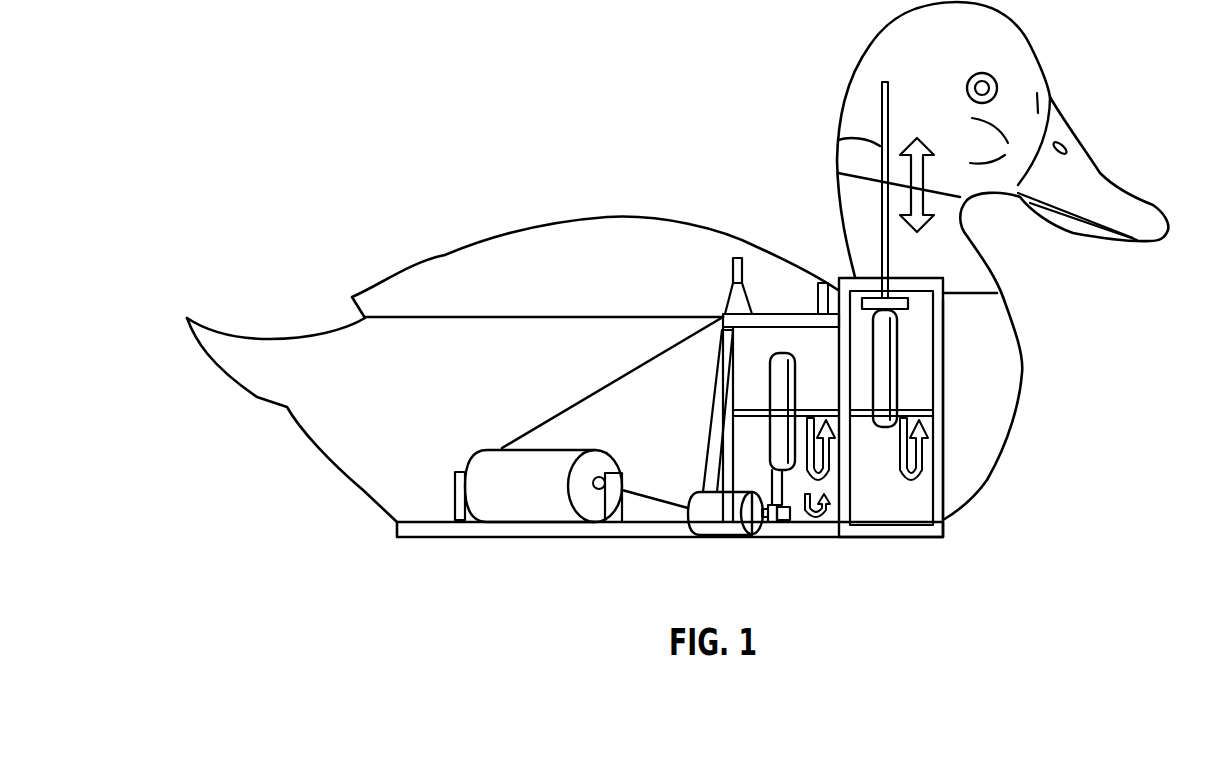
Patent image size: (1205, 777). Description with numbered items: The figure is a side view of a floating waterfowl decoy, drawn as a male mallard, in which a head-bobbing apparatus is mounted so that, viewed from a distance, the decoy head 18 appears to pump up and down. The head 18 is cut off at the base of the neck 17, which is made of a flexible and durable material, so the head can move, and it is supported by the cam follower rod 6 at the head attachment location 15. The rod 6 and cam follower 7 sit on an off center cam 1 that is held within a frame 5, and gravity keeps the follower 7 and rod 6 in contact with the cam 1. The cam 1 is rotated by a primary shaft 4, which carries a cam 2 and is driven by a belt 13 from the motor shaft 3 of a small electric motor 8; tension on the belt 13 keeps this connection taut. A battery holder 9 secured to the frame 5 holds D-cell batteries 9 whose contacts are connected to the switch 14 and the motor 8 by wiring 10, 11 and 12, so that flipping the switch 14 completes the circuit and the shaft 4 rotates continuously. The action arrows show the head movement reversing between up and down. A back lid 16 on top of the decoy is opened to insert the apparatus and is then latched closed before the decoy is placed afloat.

The off center cam 1 is at (893, 372).
The cam 2 is at (780, 353).
The motor shaft 3 is at (788, 524).
The primary shaft 4 is at (750, 410).
The frame 5 is at (943, 368).
The cam follower rod 6 is at (838, 140).
The cam follower 7 is at (910, 303).
The motor 8 is at (710, 523).
The battery holder 9 is at (518, 499).
The wiring 10 is at (601, 388).
The wiring 11 is at (714, 392).
The wiring 12 is at (655, 501).
The belt 13 is at (787, 500).
The switch 14 is at (728, 291).
The head attachment location 15 is at (884, 82).
The back lid 16 is at (489, 305).
The neck 17 is at (915, 270).
The head 18 is at (944, 53).